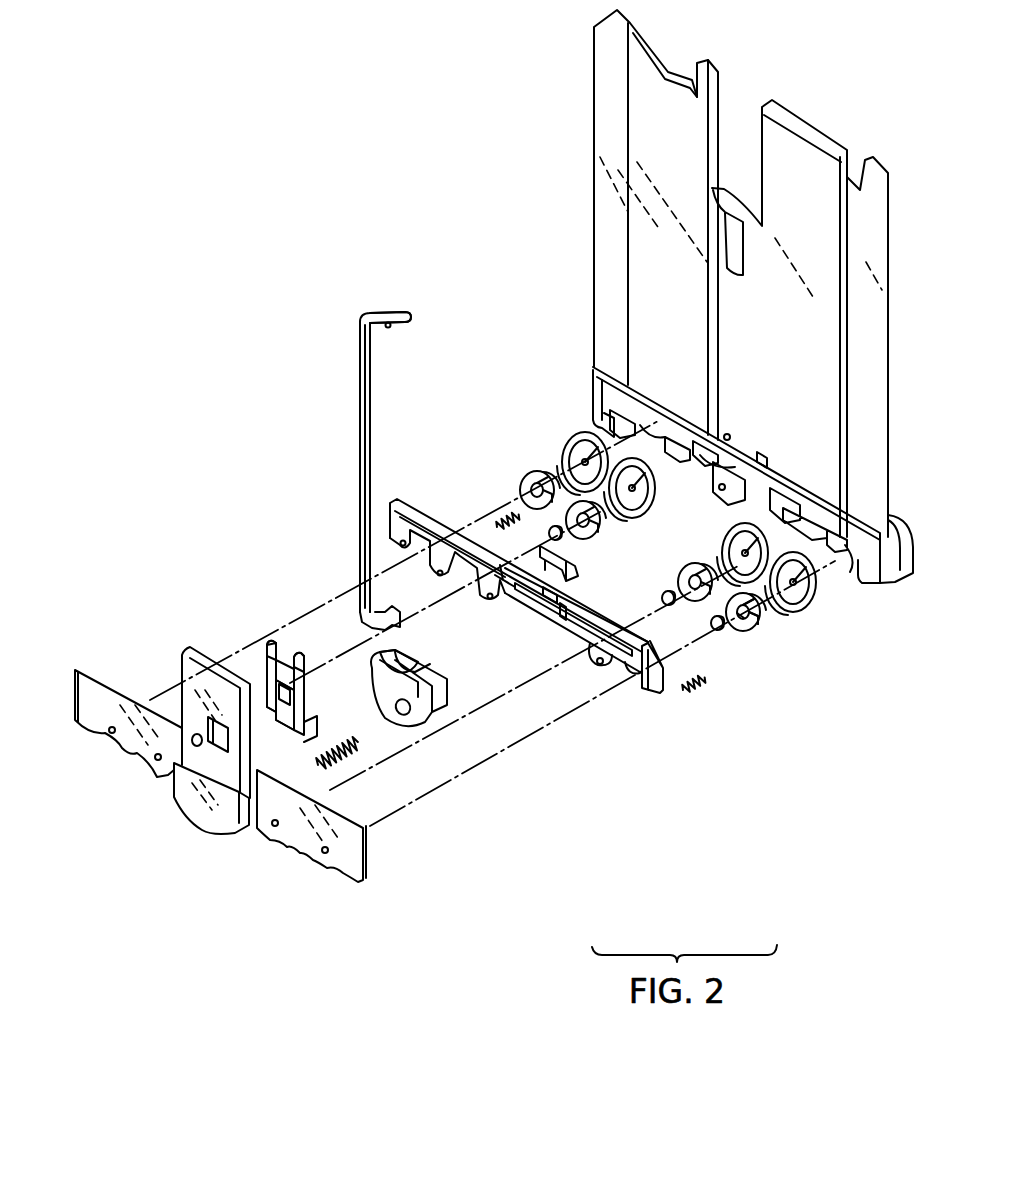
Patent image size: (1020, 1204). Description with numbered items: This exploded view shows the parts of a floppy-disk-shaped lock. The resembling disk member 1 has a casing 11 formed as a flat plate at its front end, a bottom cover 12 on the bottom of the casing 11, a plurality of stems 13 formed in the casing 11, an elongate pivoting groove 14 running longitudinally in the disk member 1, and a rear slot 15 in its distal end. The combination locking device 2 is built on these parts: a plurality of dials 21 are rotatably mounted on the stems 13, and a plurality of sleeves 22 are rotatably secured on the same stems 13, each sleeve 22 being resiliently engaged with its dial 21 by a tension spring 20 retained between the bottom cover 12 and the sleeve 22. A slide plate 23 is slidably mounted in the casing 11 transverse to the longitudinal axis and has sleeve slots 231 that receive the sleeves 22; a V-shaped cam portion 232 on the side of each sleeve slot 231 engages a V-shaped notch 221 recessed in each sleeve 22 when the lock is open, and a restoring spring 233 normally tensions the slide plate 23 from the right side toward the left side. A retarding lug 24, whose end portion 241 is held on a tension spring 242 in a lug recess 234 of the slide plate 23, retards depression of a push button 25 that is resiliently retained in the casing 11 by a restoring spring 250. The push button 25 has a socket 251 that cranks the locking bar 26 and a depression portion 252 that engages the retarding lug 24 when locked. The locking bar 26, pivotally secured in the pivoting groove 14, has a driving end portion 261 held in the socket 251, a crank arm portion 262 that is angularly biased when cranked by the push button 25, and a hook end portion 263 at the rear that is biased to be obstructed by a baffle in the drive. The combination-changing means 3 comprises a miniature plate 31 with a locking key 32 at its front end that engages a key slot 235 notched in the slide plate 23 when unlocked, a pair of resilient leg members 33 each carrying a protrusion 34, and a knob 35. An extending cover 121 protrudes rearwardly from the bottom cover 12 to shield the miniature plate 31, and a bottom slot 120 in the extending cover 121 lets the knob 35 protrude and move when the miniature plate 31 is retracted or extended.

The resembling disk member 1 is at (585, 78).
The casing 11 is at (592, 400).
The bottom cover 12 is at (90, 703).
The bottom slot 120 is at (228, 718).
The extending cover 121 is at (185, 677).
The stems 13 is at (856, 555).
The elongate pivoting groove 14 is at (722, 190).
The rear slot 15 is at (758, 155).
The combination locking device 2 is at (530, 430).
The tension spring 20 is at (721, 632).
The dials 21 is at (786, 613).
The sleeves 22 is at (744, 636).
The V-shaped notch 221 is at (757, 630).
The slide plate 23 is at (419, 507).
The sleeve slots 231 is at (637, 682).
The V-shaped cam portion 232 is at (640, 694).
The restoring spring 233 is at (706, 692).
The lug recess 234 is at (500, 553).
The key slot 235 is at (586, 604).
The retarding lug 24 is at (581, 576).
The end portion 241 is at (576, 538).
The tension spring 242 is at (499, 513).
The push button 25 is at (419, 660).
The restoring spring 250 is at (322, 748).
The socket 251 is at (383, 666).
The depression portion 252 is at (427, 693).
The locking bar 26 is at (352, 414).
The driving end portion 261 is at (400, 625).
The crank arm portion 262 is at (368, 598).
The hook end portion 263 is at (392, 312).
The combination-changing means 3 is at (289, 640).
The miniature plate 31 is at (284, 712).
The locking key 32 is at (300, 740).
The resilient leg members 33 is at (272, 690).
The protrusion 34 is at (271, 648).
The knob 35 is at (291, 690).